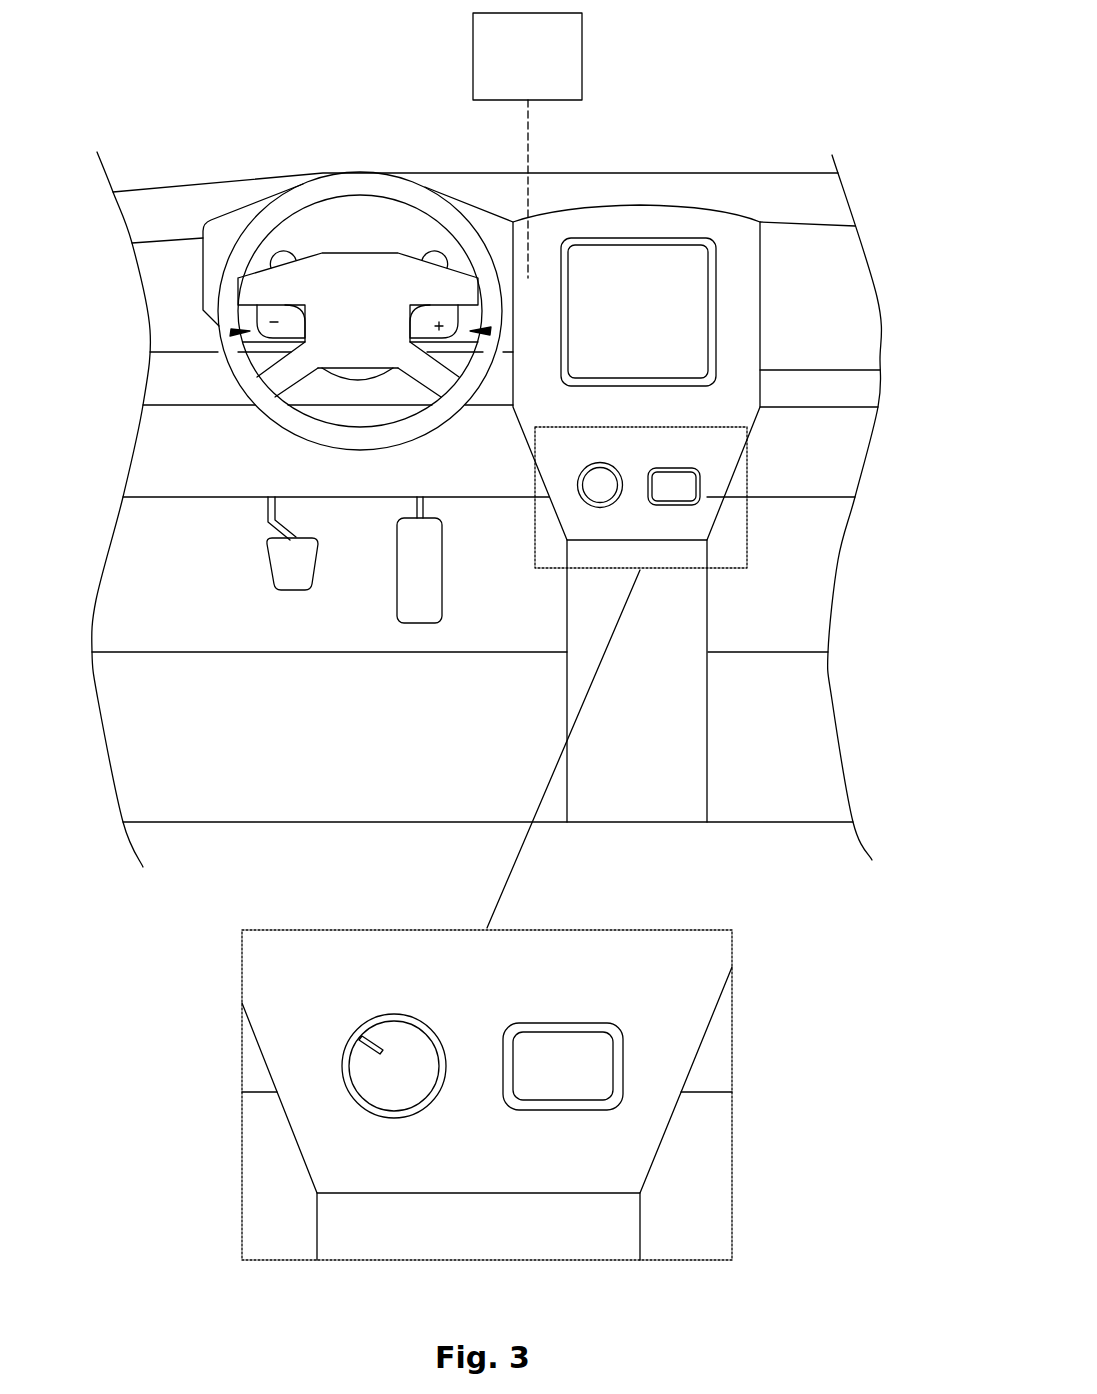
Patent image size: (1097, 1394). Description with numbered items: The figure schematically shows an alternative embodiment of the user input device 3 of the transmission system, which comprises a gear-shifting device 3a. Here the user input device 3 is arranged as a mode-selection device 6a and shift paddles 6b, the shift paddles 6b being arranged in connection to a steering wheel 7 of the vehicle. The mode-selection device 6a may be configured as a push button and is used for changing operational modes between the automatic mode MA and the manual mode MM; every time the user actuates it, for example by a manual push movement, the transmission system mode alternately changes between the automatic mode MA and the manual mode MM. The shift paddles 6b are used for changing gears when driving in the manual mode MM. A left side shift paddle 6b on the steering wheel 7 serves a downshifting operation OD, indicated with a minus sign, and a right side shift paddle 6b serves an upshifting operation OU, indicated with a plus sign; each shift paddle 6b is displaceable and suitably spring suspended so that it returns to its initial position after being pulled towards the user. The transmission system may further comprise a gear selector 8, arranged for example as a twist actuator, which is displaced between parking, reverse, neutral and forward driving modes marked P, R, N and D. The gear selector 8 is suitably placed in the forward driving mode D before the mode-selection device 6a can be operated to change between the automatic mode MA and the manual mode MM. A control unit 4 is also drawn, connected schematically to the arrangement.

The user input device 3 is at (745, 103).
The gear-shifting device 3a is at (277, 317).
The shift paddles 6b is at (427, 323).
The control unit 4 is at (582, 58).
The steering wheel 7 is at (344, 190).
The gear selector 8 is at (400, 1073).
The mode-selection device 6a is at (567, 1068).
The upshifting operation OU is at (485, 333).
The downshifting operation OD is at (235, 333).
The automatic mode MA is at (603, 964).
The manual mode MM is at (641, 497).